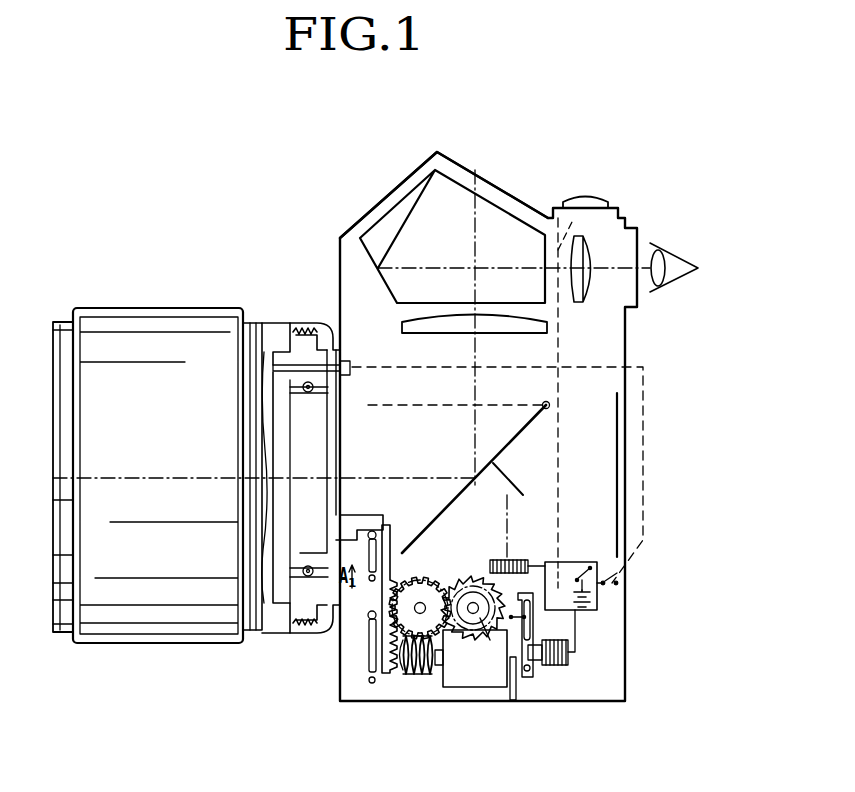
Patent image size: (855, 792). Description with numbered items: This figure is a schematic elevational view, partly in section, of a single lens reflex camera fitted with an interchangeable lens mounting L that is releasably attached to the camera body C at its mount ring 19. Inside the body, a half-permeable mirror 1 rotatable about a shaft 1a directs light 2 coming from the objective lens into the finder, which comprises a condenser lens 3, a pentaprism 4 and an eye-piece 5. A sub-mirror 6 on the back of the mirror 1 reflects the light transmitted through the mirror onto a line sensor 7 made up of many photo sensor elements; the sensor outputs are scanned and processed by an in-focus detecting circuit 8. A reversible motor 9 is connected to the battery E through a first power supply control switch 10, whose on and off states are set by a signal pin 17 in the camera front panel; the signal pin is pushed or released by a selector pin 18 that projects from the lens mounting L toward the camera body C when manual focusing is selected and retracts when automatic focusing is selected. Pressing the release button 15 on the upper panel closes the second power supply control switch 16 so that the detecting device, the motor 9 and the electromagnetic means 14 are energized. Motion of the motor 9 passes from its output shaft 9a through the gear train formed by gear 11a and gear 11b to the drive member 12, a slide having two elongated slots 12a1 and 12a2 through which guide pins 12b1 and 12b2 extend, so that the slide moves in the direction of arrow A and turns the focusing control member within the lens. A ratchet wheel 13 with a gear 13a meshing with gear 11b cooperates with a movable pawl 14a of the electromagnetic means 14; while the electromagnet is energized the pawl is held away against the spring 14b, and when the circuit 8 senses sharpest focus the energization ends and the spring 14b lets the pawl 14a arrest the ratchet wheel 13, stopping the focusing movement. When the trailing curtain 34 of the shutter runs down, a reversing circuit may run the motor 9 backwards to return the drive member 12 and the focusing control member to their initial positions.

The lens mounting L is at (165, 308).
The selector pin 18 is at (277, 362).
The mount ring 19 is at (323, 335).
The signal pin 17 is at (350, 373).
The light 2 is at (382, 478).
The camera body C is at (487, 182).
The pentaprism 4 is at (398, 283).
The condenser lens 3 is at (511, 324).
The release button 15 is at (586, 198).
The eye-piece 5 is at (579, 297).
The half-permeable mirror 1 is at (460, 495).
The shaft 1a is at (548, 410).
The sub-mirror 6 is at (521, 488).
The line sensor 7 is at (518, 560).
The in-focus detecting circuit 8 is at (570, 562).
The second power supply control switch 16 is at (585, 566).
The battery E is at (590, 599).
The first power supply control switch 10 is at (618, 583).
The trailing curtain 34 is at (617, 447).
The movable pawl 14a is at (533, 627).
The electromagnetic means 14 is at (548, 673).
The spring 14b is at (512, 690).
The reversible motor 9 is at (453, 680).
The output shaft 9a is at (440, 676).
The gear 11b is at (423, 578).
The gear 11a is at (410, 675).
The ratchet wheel 13 is at (468, 642).
The gear 13a is at (488, 642).
The drive member 12 is at (376, 673).
The guide pin 12b2 is at (377, 539).
The elongated slot 12a2 is at (370, 582).
The guide pin 12b1 is at (369, 618).
The elongated slot 12a1 is at (370, 682).